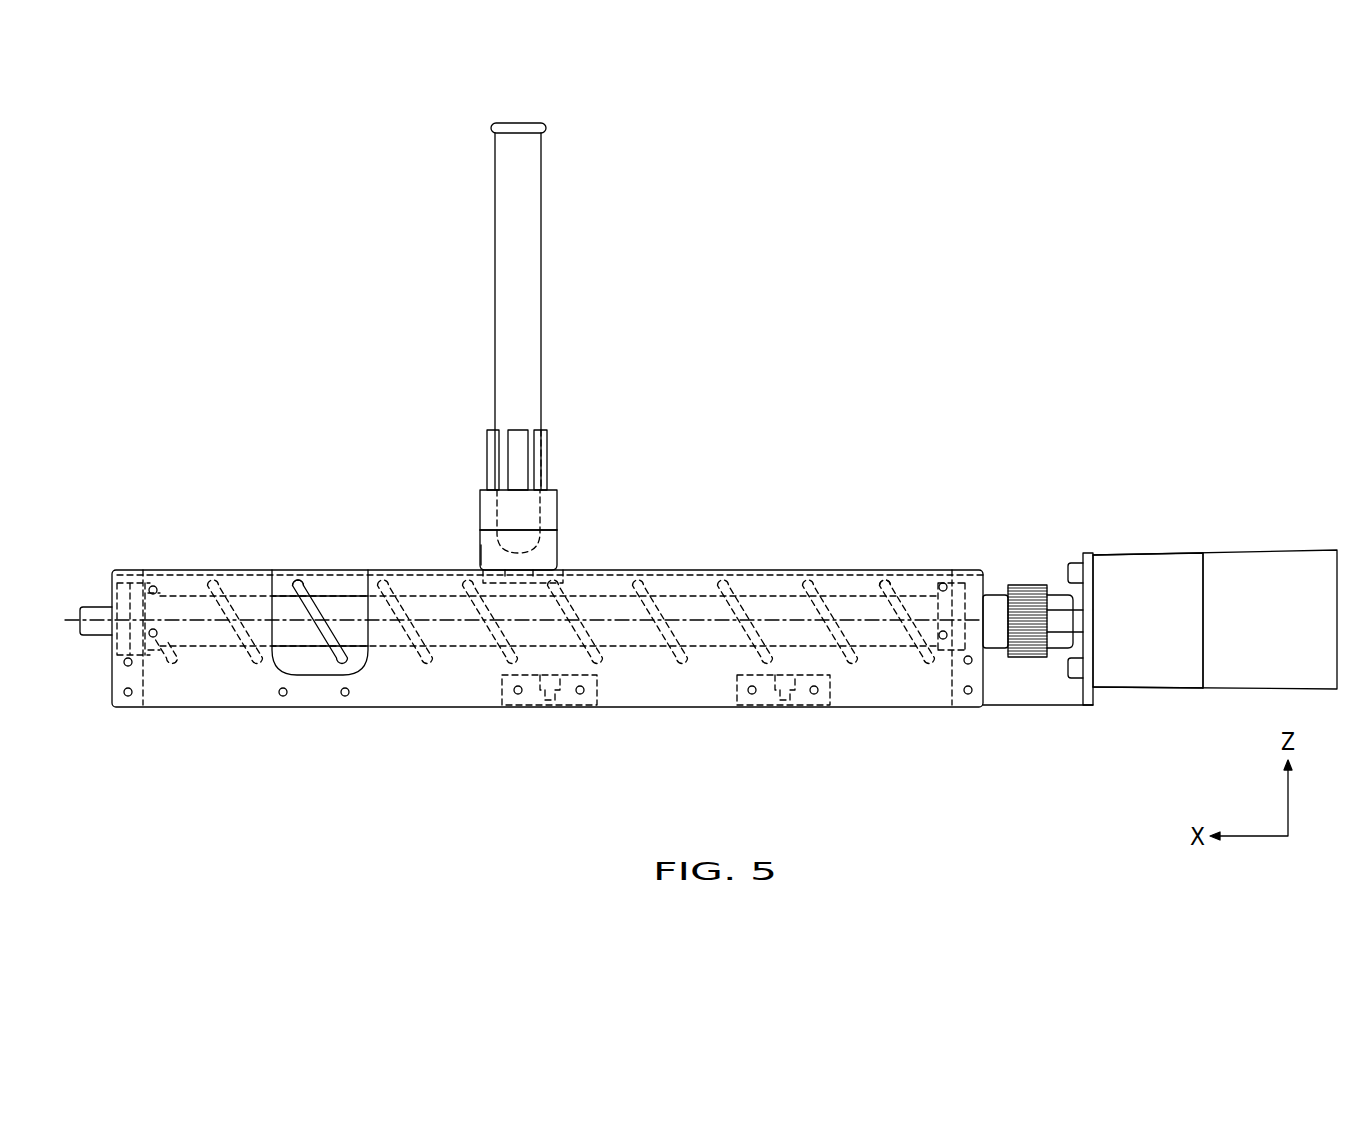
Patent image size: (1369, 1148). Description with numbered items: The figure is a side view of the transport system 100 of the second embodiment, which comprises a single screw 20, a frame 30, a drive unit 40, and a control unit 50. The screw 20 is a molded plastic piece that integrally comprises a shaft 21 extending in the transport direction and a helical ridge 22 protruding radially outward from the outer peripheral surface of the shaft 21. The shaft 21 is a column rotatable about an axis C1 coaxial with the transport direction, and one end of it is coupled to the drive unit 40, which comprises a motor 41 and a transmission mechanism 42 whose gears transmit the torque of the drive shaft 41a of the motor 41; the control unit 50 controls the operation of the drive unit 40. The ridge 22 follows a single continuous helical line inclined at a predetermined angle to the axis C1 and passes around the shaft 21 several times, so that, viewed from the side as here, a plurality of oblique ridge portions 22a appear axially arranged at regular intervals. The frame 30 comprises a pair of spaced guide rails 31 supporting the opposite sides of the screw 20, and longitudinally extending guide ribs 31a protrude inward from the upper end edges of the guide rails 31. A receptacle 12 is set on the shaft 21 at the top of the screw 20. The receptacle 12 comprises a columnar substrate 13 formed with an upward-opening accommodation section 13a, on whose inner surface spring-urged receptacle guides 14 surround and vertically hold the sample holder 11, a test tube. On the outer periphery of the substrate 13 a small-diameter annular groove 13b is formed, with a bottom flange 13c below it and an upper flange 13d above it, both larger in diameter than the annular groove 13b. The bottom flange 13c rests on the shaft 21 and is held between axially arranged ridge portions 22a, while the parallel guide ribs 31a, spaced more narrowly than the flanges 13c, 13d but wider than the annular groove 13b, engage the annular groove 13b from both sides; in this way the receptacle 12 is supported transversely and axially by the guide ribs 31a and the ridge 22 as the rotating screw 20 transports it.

The transport system 100 is at (1083, 360).
The sample holder 11 is at (530, 232).
The receptacle 12 is at (557, 497).
The substrate 13 is at (486, 502).
The accommodation section 13a is at (500, 525).
The annular groove 13b is at (557, 566).
The bottom flange 13c is at (535, 583).
The upper flange 13d is at (557, 535).
The receptacle guides 14 is at (540, 437).
The screw 20 is at (877, 630).
The shaft 21 is at (610, 595).
The helical ridge 22 is at (643, 582).
The ridge portions 22a is at (383, 577).
The frame 30 is at (457, 668).
The guide rails 31 is at (280, 577).
The guide ribs 31a is at (159, 572).
The drive unit 40 is at (1190, 560).
The motor 41 is at (1142, 560).
The drive shaft 41a is at (1058, 612).
The transmission mechanism 42 is at (1020, 590).
The control unit 50 is at (1252, 560).
The axis C1 is at (75, 620).